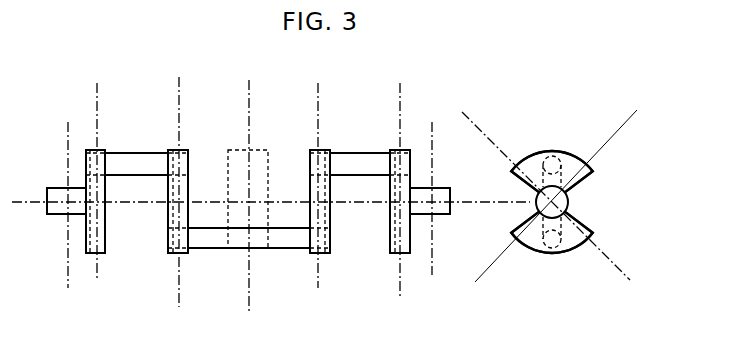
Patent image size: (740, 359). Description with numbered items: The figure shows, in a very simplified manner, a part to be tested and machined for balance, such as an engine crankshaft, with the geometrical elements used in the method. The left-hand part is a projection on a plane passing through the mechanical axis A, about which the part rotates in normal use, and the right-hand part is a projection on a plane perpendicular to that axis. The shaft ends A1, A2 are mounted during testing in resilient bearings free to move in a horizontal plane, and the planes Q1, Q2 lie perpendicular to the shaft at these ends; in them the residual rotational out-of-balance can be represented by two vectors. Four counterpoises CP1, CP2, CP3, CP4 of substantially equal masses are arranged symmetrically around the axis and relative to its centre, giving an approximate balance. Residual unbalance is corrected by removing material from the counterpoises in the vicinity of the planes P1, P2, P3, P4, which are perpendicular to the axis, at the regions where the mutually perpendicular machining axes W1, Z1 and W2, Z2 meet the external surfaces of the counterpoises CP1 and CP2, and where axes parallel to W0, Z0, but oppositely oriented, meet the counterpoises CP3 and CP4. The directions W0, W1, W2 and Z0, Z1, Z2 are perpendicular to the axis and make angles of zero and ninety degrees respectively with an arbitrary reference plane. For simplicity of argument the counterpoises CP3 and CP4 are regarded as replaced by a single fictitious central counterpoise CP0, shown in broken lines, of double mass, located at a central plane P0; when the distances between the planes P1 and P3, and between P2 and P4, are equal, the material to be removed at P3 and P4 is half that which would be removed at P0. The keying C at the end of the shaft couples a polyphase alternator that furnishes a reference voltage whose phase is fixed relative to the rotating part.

The central plane P0 is at (252, 187).
The plane of first counterpoise P1 is at (99, 171).
The plane of second counterpoise P2 is at (407, 179).
The plane of third counterpoise P3 is at (183, 184).
The plane of fourth counterpoise P4 is at (325, 175).
The shaft end A1 is at (72, 207).
The shaft end A2 is at (440, 196).
The plane at first shaft end Q1 is at (72, 218).
The plane at second shaft end Q2 is at (444, 205).
The fictitious central counterpoise CP0 is at (255, 149).
The counterpoise CP1 is at (106, 254).
The counterpoise CP2 is at (393, 255).
The counterpoise CP3 is at (183, 149).
The counterpoise CP4 is at (322, 149).
The keying C is at (566, 188).
The machining axis Z0 is at (559, 202).
The machining axis Z1 is at (570, 215).
The machining axis Z2 is at (481, 132).
The machining axis W0 is at (571, 199).
The machining axis W1 is at (556, 203).
The machining axis W2 is at (614, 139).